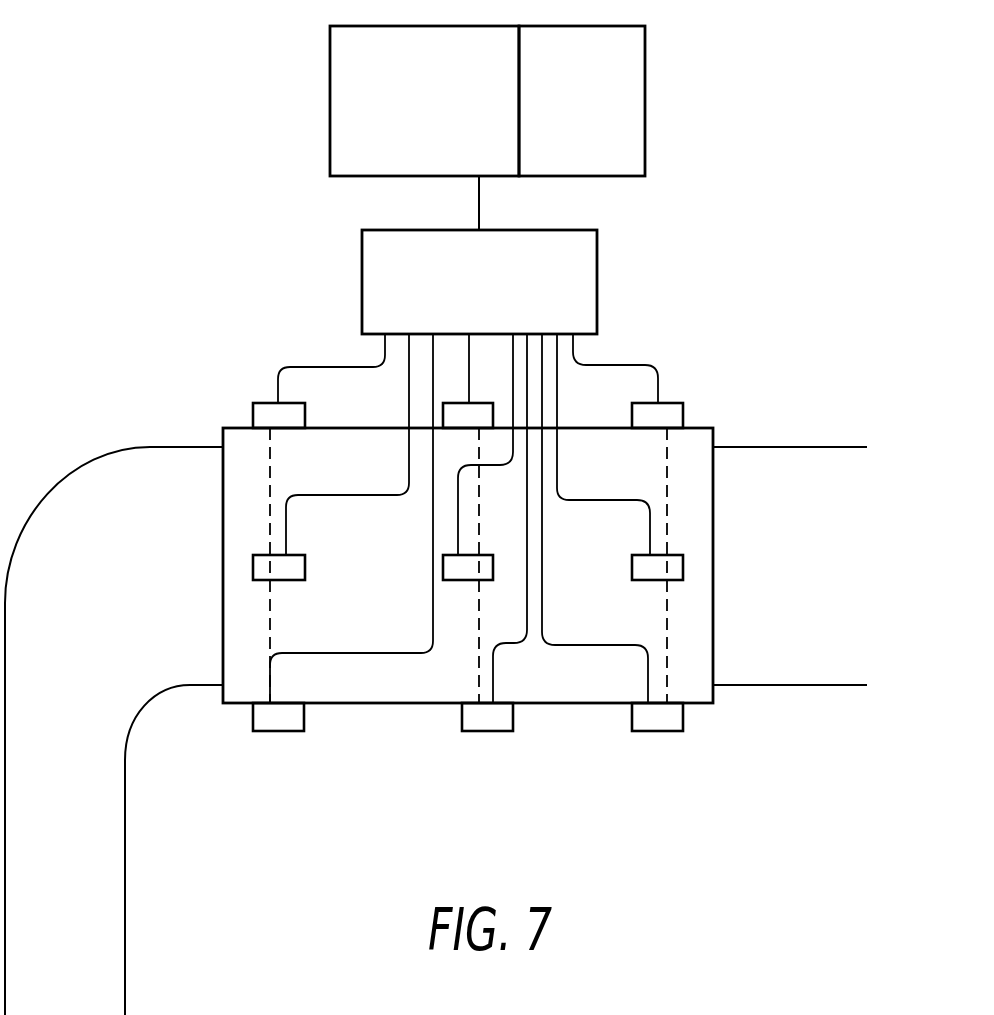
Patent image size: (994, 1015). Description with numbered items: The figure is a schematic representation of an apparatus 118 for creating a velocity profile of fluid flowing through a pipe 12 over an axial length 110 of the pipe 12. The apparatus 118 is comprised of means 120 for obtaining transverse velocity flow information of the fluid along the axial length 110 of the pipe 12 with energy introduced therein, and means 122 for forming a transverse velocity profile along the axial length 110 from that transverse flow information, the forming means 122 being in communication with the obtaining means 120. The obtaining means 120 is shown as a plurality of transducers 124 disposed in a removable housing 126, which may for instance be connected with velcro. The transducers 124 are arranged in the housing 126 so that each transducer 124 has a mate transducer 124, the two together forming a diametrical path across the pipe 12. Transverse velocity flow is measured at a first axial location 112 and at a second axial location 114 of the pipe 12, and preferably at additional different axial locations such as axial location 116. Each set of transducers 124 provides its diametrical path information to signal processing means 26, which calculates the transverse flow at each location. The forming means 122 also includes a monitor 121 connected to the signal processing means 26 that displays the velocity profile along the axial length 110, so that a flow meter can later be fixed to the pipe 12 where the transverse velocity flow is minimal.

The pipe 12 is at (830, 460).
The signal processing means 26 is at (504, 67).
The axial length 110 is at (242, 737).
The first axial location 112 is at (270, 630).
The second axial location 114 is at (478, 620).
The axial location 116 is at (667, 623).
The apparatus 118 is at (213, 272).
The obtaining means 120 is at (550, 737).
The monitor 121 is at (632, 66).
The forming means 122 is at (597, 275).
The transducers 124 is at (258, 408).
The housing 126 is at (439, 691).